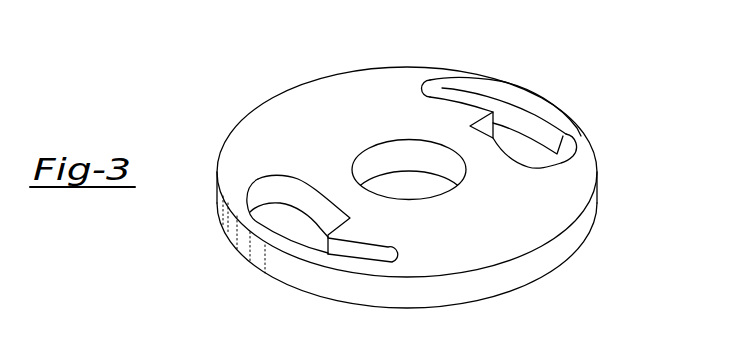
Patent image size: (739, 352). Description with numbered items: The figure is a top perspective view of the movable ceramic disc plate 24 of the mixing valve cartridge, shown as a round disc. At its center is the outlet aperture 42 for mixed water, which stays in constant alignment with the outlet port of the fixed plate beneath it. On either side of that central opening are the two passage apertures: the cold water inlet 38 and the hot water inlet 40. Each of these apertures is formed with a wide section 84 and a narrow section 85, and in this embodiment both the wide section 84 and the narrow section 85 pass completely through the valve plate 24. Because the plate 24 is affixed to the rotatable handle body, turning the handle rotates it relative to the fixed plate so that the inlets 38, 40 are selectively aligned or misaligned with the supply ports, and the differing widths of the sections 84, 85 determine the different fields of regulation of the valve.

The movable ceramic disc plate 24 is at (290, 98).
The cold water inlet 38 is at (513, 143).
The hot water inlet 40 is at (298, 227).
The outlet aperture 42 is at (407, 184).
The wide section 84 is at (273, 202).
The narrow section 85 is at (348, 247).